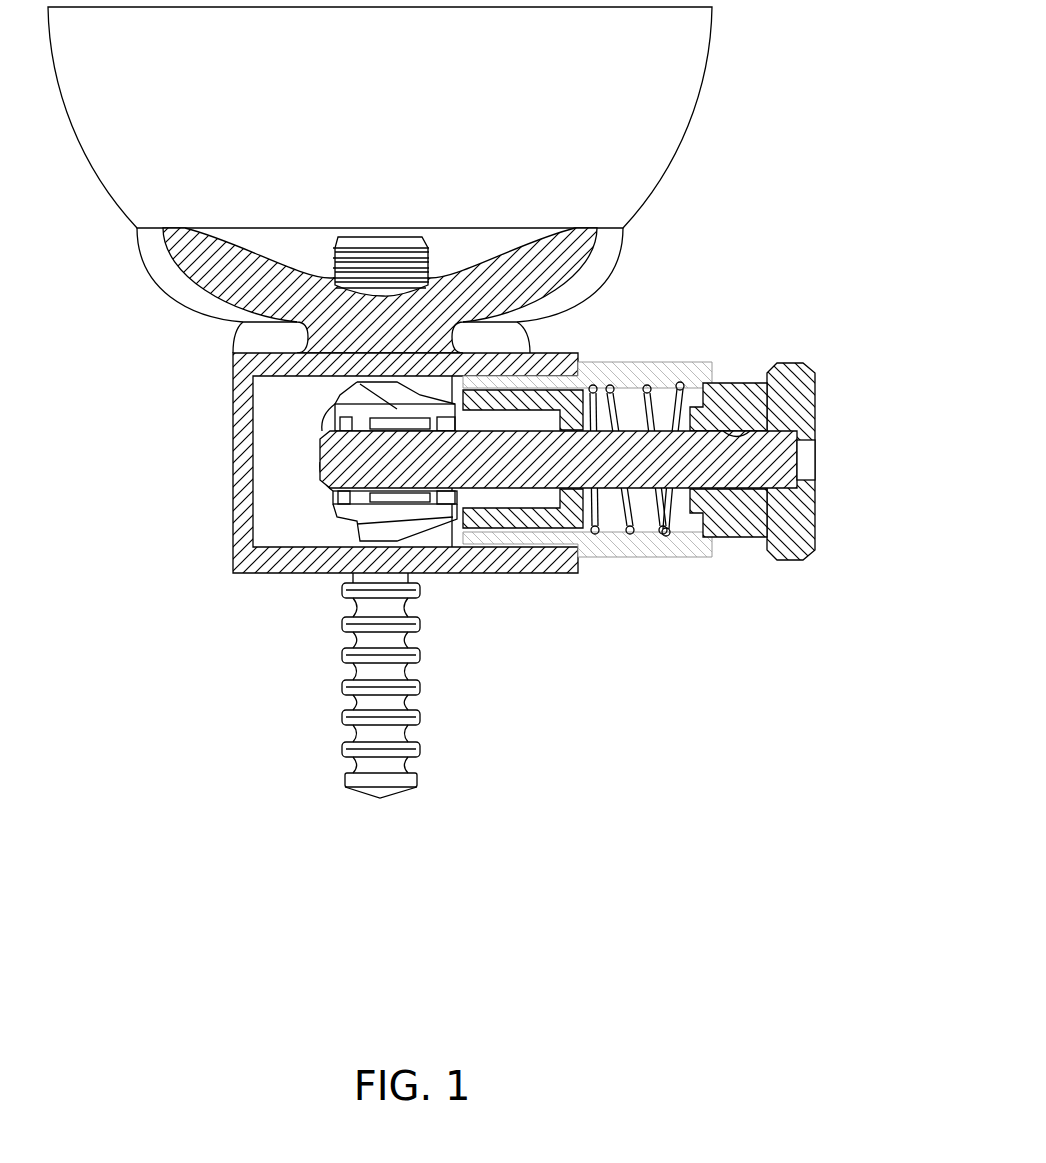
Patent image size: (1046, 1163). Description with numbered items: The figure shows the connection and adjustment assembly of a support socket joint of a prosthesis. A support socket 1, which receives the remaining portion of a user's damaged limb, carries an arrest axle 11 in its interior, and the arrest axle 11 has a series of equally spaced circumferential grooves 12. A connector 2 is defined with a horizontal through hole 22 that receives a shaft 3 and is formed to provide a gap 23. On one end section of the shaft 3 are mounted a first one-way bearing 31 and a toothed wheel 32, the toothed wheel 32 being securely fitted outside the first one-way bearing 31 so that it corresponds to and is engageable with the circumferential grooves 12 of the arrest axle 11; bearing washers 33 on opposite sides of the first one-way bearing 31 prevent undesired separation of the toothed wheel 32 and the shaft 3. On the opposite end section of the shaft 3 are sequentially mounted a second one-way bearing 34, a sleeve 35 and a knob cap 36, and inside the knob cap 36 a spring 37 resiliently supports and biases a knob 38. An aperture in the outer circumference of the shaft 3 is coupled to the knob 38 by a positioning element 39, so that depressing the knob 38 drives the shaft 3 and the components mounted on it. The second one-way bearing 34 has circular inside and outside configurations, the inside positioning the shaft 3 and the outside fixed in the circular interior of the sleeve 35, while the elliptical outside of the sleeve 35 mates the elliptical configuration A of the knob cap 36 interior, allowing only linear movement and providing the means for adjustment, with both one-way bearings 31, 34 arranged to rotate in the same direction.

The support socket 1 is at (405, 180).
The connector 2 is at (369, 490).
The shaft 3 is at (605, 438).
The arrest axle 11 is at (278, 685).
The circumferential grooves 12 is at (278, 670).
The horizontal through hole 22 is at (357, 603).
The gap 23 is at (299, 461).
The first one-way bearing 31 is at (300, 399).
The toothed wheel 32 is at (300, 370).
The bearing washers 33 is at (300, 514).
The second one-way bearing 34 is at (504, 516).
The sleeve 35 is at (587, 513).
The knob cap 36 is at (636, 512).
The spring 37 is at (733, 422).
The knob 38 is at (755, 502).
The positioning element 39 is at (798, 468).
The elliptical configuration A is at (613, 394).